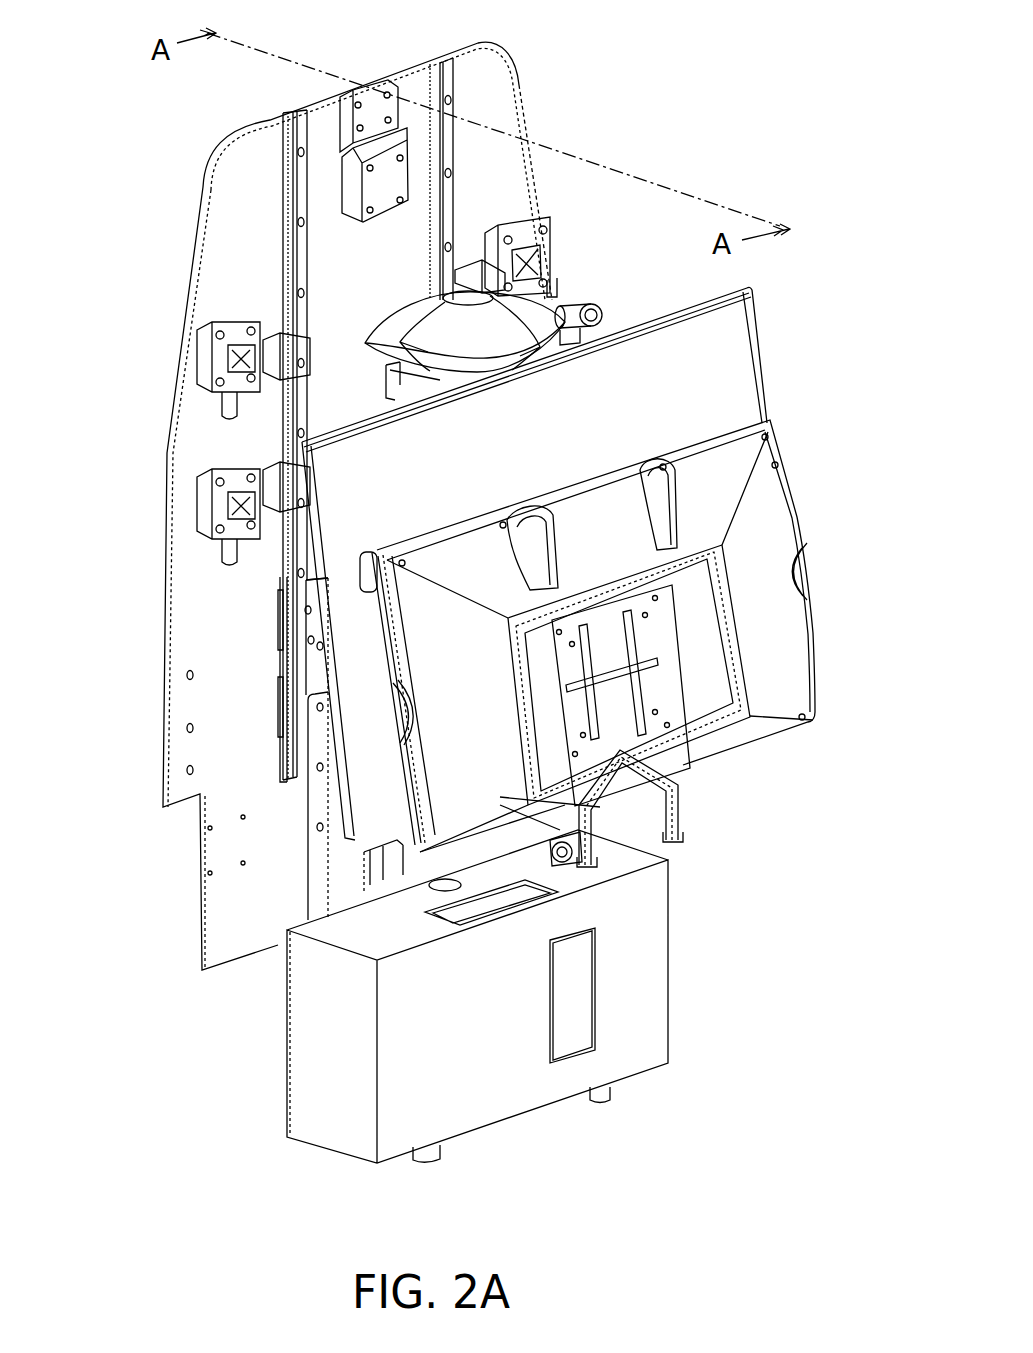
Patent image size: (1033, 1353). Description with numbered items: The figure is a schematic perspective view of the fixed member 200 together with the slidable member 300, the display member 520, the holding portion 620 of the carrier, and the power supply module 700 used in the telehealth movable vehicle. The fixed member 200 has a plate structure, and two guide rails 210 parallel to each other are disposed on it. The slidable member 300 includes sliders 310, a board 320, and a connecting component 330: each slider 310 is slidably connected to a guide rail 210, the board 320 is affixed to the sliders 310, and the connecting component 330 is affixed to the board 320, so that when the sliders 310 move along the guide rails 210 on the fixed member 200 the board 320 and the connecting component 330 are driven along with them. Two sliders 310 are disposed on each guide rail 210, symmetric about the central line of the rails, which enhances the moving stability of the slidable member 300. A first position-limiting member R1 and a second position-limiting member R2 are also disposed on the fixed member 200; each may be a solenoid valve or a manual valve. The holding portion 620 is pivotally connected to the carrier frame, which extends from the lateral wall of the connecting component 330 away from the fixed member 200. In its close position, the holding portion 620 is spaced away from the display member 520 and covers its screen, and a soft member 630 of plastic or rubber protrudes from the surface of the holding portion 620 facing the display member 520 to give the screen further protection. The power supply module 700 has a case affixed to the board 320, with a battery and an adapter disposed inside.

The fixed member 200 is at (240, 172).
The guide rail 210 is at (447, 63).
The first position-limiting member R1 is at (195, 518).
The second position-limiting member R2 is at (195, 368).
The slidable member 300 is at (88, 587).
The slider 310 is at (290, 712).
The board 320 is at (290, 747).
The connecting component 330 is at (303, 615).
The display member 520 is at (735, 362).
The holding portion 620 is at (775, 510).
The soft member 630 is at (362, 575).
The power supply module 700 is at (652, 965).